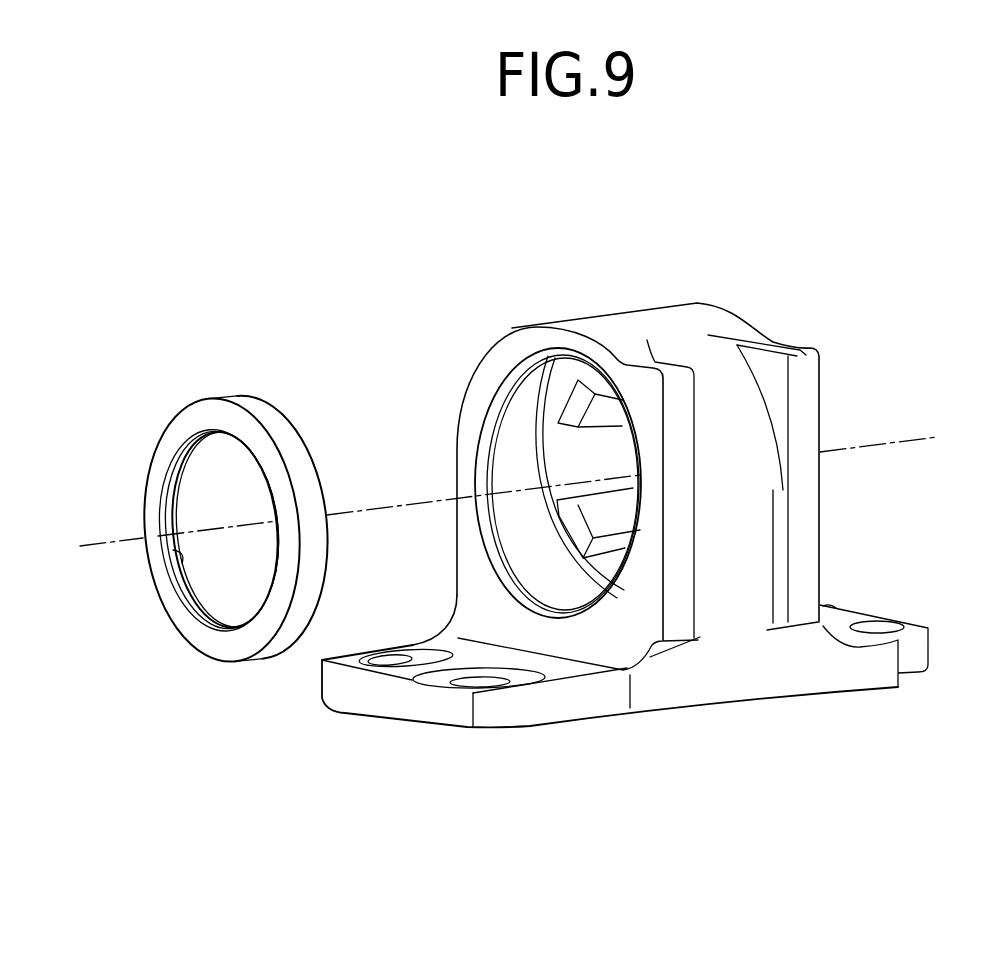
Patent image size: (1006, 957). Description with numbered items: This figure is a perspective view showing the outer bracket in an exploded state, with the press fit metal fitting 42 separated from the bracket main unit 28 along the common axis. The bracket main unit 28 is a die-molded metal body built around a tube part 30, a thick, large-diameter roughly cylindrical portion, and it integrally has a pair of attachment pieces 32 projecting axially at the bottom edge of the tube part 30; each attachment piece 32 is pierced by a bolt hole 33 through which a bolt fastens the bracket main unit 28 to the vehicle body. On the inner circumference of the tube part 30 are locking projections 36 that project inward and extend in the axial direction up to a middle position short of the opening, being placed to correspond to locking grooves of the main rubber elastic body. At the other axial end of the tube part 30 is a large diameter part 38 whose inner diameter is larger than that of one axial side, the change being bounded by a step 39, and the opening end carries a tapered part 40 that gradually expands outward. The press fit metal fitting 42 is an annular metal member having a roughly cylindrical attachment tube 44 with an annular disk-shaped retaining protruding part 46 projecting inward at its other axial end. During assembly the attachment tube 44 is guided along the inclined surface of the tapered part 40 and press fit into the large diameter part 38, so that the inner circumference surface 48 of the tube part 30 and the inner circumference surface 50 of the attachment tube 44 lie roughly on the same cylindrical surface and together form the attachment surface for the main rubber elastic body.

The bracket main unit 28 is at (783, 321).
The tube part 30 is at (653, 327).
The attachment piece 32 is at (437, 708).
The bolt hole 33 is at (378, 659).
The locking projection 36 is at (580, 407).
The large diameter part 38 is at (577, 600).
The step 39 is at (557, 386).
The tapered part 40 is at (477, 453).
The press fit metal fitting 42 is at (228, 537).
The attachment tube 44 is at (283, 427).
The retaining protruding part 46 is at (232, 634).
The inner circumference surface 48 is at (612, 578).
The inner circumference surface 50 is at (182, 561).